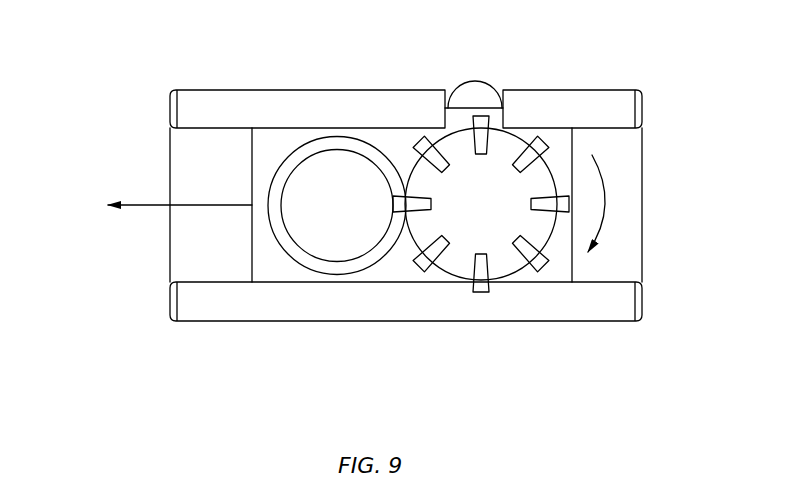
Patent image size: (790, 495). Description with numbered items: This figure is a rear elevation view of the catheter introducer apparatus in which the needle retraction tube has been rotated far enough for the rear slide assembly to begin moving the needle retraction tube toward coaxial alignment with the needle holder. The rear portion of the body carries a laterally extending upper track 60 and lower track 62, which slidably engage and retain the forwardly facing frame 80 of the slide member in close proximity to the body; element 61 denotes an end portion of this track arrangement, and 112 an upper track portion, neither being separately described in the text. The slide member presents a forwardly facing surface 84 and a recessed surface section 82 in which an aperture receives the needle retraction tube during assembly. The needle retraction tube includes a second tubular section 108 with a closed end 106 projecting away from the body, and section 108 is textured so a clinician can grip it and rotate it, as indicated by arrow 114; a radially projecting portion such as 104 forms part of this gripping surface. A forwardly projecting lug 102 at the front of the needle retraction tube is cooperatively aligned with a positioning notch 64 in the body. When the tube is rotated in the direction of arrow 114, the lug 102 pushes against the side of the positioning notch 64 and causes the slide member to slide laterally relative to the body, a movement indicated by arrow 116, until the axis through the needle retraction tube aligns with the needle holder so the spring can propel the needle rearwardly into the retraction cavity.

The upper track 60 is at (280, 100).
The end wall 61 is at (183, 244).
The lower track 62 is at (213, 310).
The positioning notch 64 is at (451, 99).
The frame 80 is at (250, 165).
The recessed surface section 82 is at (558, 273).
The forwardly facing surface 84 is at (287, 270).
The forwardly projecting lug 102 is at (477, 85).
The blade 104 is at (541, 163).
The closed end 106 is at (500, 218).
The second tubular section 108 is at (538, 177).
The upper right bar 112 is at (613, 97).
The arrow 114 is at (612, 200).
The flow direction 116 is at (152, 205).